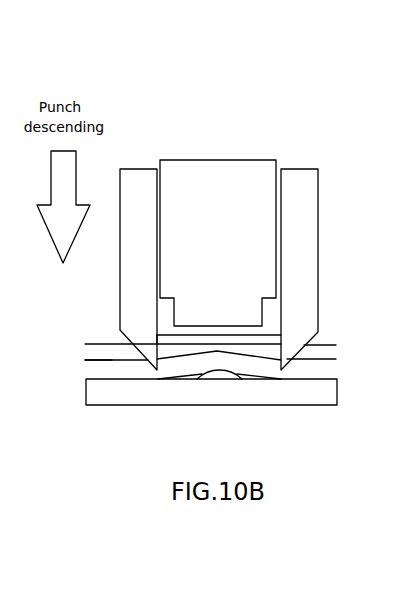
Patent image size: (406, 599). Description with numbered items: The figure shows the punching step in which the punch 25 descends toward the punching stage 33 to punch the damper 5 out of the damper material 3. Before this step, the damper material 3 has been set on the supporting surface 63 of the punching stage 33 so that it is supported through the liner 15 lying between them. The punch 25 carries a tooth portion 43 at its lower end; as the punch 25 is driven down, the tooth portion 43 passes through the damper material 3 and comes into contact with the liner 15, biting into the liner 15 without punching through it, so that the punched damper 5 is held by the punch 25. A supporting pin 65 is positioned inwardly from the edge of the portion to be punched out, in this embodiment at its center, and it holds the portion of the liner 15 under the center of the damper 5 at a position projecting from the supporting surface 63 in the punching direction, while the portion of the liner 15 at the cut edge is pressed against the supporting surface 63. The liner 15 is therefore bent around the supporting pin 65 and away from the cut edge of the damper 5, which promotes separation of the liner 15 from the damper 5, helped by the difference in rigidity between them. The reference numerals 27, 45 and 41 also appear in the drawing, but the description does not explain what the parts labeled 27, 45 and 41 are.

The punch 27 is at (237, 192).
The punch 25 is at (295, 190).
The damper 5 is at (275, 339).
The edge of plate 45 is at (160, 336).
The damper material 3 is at (326, 349).
The liner 15 is at (327, 369).
The inclined portion 41 is at (306, 342).
The punching stage 33 is at (327, 397).
The supporting surface 63 is at (112, 379).
The tooth portion 43 is at (285, 378).
The supporting pin 65 is at (217, 378).